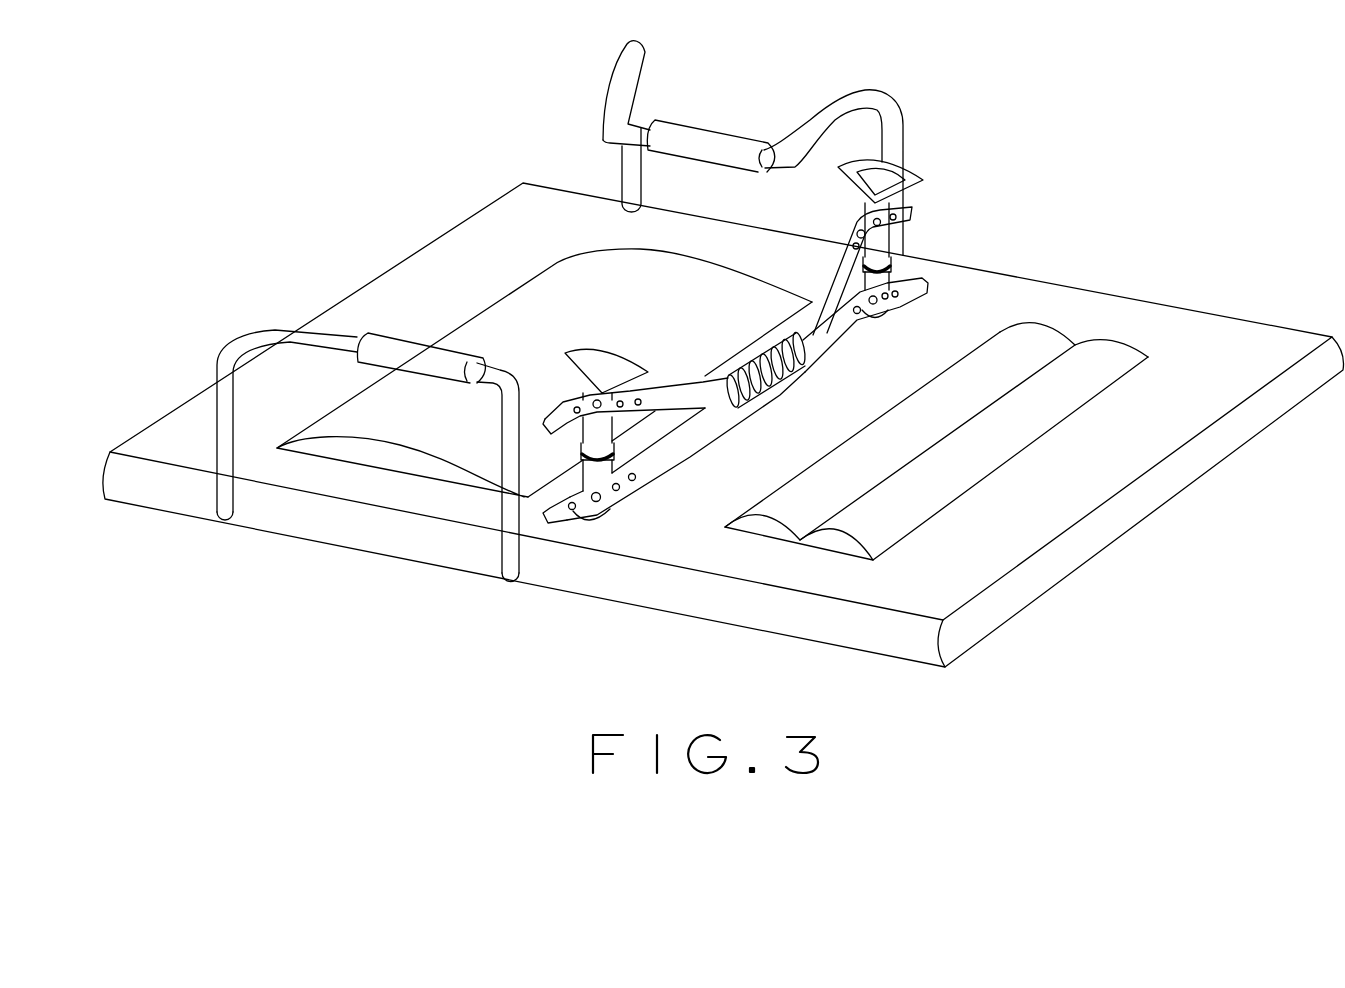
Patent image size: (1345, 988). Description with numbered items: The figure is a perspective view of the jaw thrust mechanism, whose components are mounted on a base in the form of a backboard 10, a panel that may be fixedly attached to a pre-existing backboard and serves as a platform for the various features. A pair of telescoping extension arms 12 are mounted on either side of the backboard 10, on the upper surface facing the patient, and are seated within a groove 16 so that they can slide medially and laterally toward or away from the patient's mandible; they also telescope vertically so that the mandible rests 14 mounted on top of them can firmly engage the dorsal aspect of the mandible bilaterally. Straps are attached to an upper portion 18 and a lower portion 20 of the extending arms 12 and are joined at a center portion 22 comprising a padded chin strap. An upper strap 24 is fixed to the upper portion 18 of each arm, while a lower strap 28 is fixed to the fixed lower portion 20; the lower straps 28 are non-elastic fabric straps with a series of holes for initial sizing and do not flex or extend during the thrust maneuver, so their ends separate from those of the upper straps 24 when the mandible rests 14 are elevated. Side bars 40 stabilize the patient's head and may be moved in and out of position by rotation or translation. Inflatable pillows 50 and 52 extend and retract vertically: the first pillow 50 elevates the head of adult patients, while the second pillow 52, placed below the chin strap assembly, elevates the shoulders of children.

The backboard 10 is at (1188, 550).
The telescoping extension arms 12 is at (887, 283).
The mandible rests 14 is at (903, 163).
The groove 16 is at (848, 335).
The upper portion 18 is at (567, 408).
The lower portion 20 is at (556, 518).
The center portion 22 is at (770, 376).
The upper strap 24 is at (690, 395).
The lower strap 28 is at (660, 457).
The side bars 40 is at (337, 340).
The first pillow 50 is at (622, 312).
The second pillow 52 is at (998, 442).